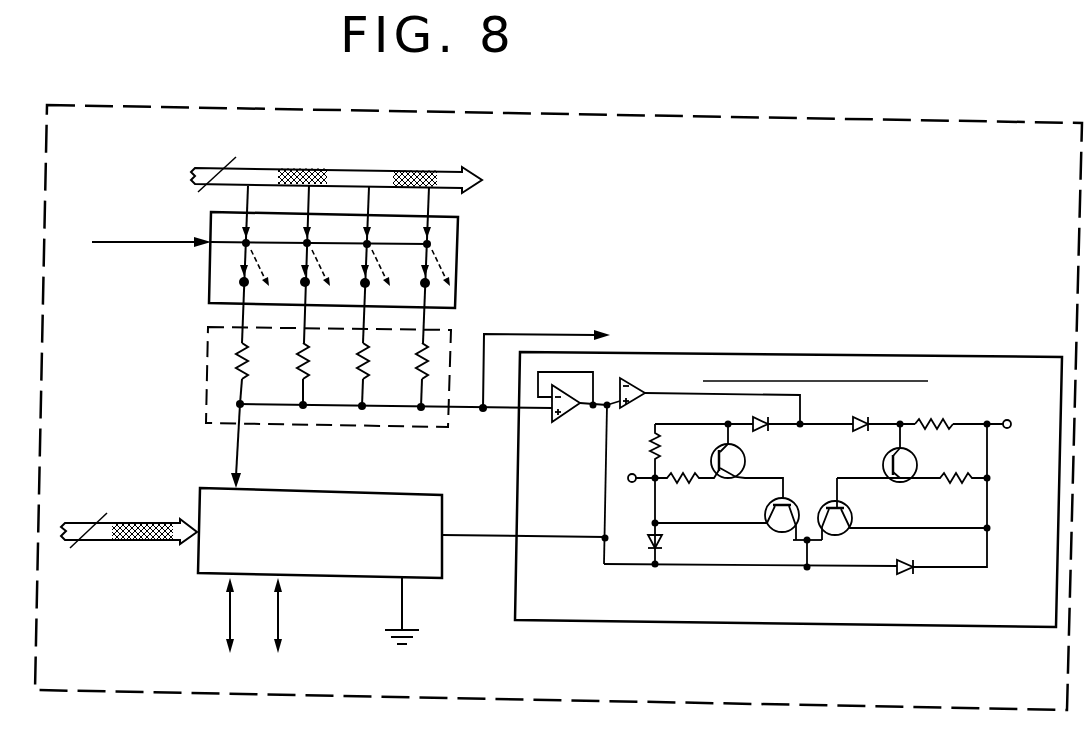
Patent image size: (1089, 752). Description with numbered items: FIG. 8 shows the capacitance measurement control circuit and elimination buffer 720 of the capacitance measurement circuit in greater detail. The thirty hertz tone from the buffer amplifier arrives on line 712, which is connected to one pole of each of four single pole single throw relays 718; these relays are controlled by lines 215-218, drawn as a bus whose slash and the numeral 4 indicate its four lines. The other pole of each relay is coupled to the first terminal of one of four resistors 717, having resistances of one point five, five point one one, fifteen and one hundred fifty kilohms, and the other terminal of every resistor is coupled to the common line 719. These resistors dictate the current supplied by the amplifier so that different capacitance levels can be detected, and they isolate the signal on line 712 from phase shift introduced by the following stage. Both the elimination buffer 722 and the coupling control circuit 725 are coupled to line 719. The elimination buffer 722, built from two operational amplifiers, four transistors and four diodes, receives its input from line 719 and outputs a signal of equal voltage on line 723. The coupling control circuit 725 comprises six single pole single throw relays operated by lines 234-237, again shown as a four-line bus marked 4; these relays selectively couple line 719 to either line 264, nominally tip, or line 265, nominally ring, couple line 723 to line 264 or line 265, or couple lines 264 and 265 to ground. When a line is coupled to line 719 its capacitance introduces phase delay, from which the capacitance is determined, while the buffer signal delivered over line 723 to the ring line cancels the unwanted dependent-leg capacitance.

The capacitance measurement control circuit and elimination buffer 720 is at (856, 113).
The lines 215-218 is at (354, 182).
The number of lines indicator 4 is at (153, 347).
The line 712 is at (133, 239).
The single pole single throw relays 718 is at (459, 241).
The resistors 717 is at (207, 334).
The line 719 is at (474, 412).
The coupling control circuit 725 is at (378, 491).
The lines 234-237 is at (108, 542).
The line 723 is at (478, 541).
The line 264 is at (229, 626).
The line 265 is at (279, 625).
The elimination buffer 722 is at (849, 350).